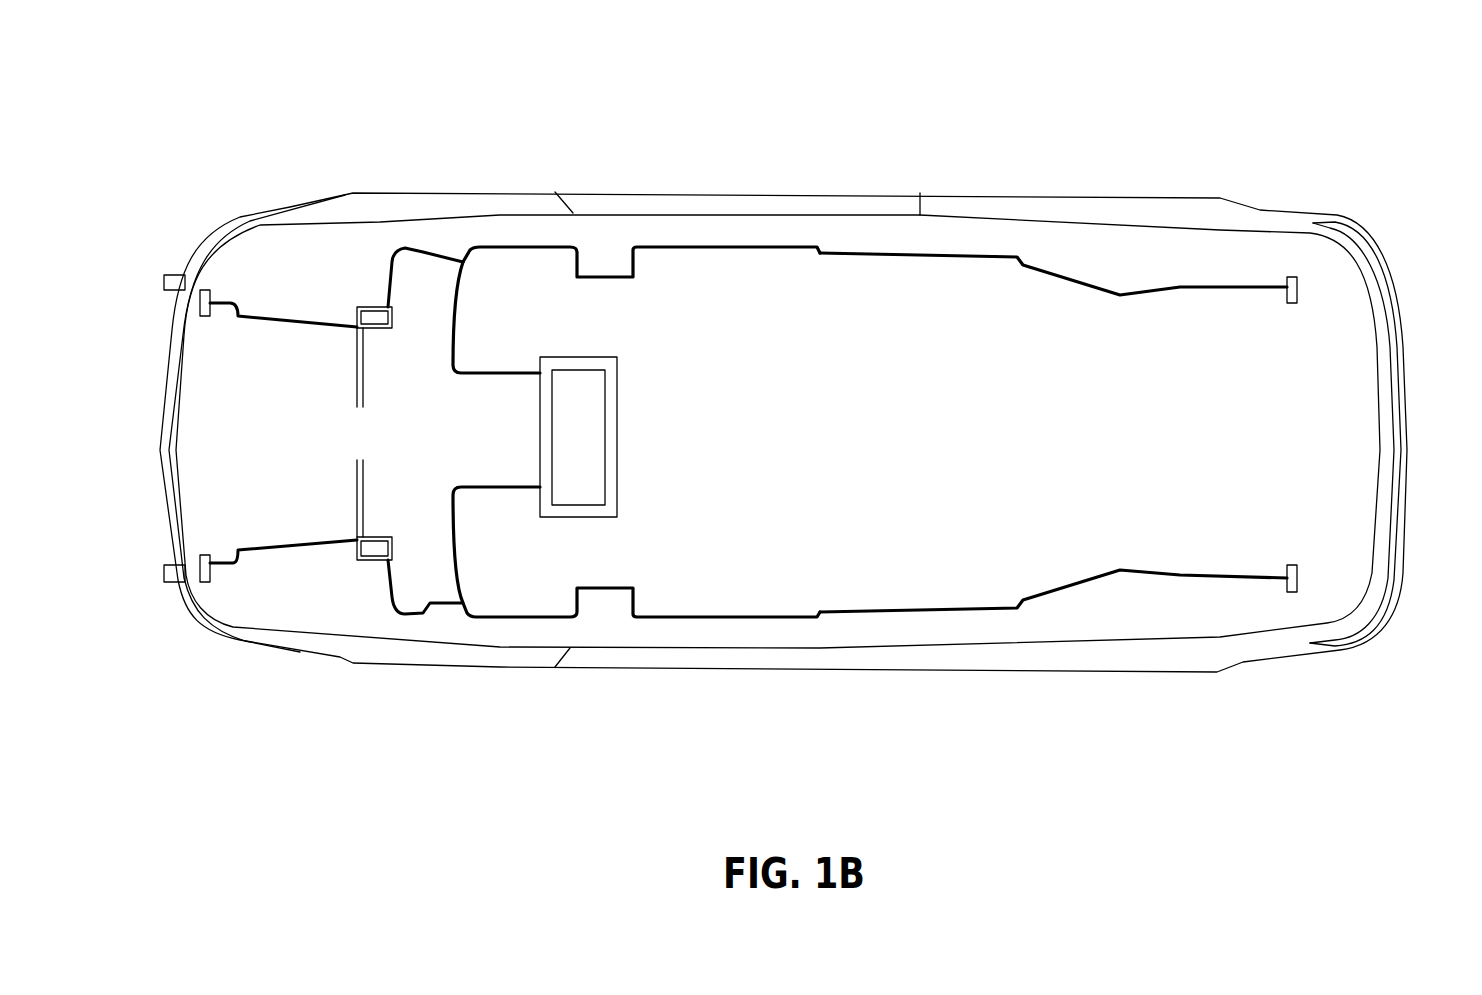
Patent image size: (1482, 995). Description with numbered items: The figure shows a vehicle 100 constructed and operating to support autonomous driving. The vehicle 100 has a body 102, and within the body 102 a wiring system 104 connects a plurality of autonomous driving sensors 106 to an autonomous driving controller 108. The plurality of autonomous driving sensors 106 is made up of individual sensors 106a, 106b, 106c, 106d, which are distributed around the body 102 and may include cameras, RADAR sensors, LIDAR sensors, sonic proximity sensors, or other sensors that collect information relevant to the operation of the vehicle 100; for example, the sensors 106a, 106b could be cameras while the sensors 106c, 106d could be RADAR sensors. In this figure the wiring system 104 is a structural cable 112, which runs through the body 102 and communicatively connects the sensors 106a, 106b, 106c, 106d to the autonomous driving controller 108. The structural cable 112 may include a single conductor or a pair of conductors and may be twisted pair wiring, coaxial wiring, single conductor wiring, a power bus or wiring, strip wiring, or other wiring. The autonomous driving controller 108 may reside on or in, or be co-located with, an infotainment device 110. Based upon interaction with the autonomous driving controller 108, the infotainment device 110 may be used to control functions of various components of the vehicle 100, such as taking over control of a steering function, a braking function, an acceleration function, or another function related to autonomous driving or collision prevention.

The vehicle 100 is at (786, 384).
The body 102 is at (1266, 204).
The wiring system 104 is at (1059, 257).
The autonomous driving sensors 106 is at (786, 390).
The autonomous driving sensor 106a is at (200, 300).
The autonomous driving sensor 106b is at (200, 562).
The autonomous driving sensor 106c is at (1297, 580).
The autonomous driving sensor 106d is at (1297, 288).
The autonomous driving controller 108 is at (592, 447).
The infotainment device 110 is at (617, 478).
The structural cable 112 is at (487, 247).